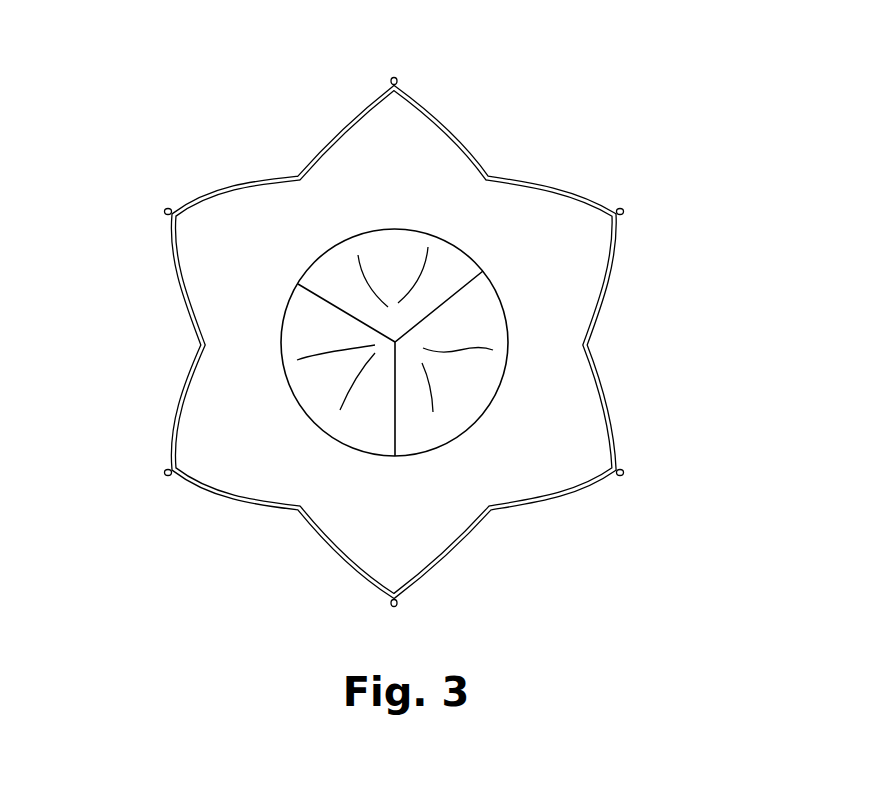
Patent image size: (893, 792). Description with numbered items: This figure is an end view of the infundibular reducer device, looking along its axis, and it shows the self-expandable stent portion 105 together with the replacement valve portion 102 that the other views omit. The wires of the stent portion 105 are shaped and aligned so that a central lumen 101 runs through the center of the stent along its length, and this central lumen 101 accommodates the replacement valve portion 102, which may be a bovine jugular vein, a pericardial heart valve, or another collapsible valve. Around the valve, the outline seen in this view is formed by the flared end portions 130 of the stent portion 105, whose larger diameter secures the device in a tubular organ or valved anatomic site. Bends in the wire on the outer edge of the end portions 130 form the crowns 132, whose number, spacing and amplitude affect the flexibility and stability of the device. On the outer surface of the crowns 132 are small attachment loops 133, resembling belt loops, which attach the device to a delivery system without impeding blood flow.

The self-expandable stent portion 105 is at (393, 322).
The central lumen 101 is at (412, 360).
The replacement valve portion 102 is at (457, 325).
The end portions 130 is at (387, 342).
The crowns 132 is at (395, 533).
The attachment loops 133 is at (170, 210).